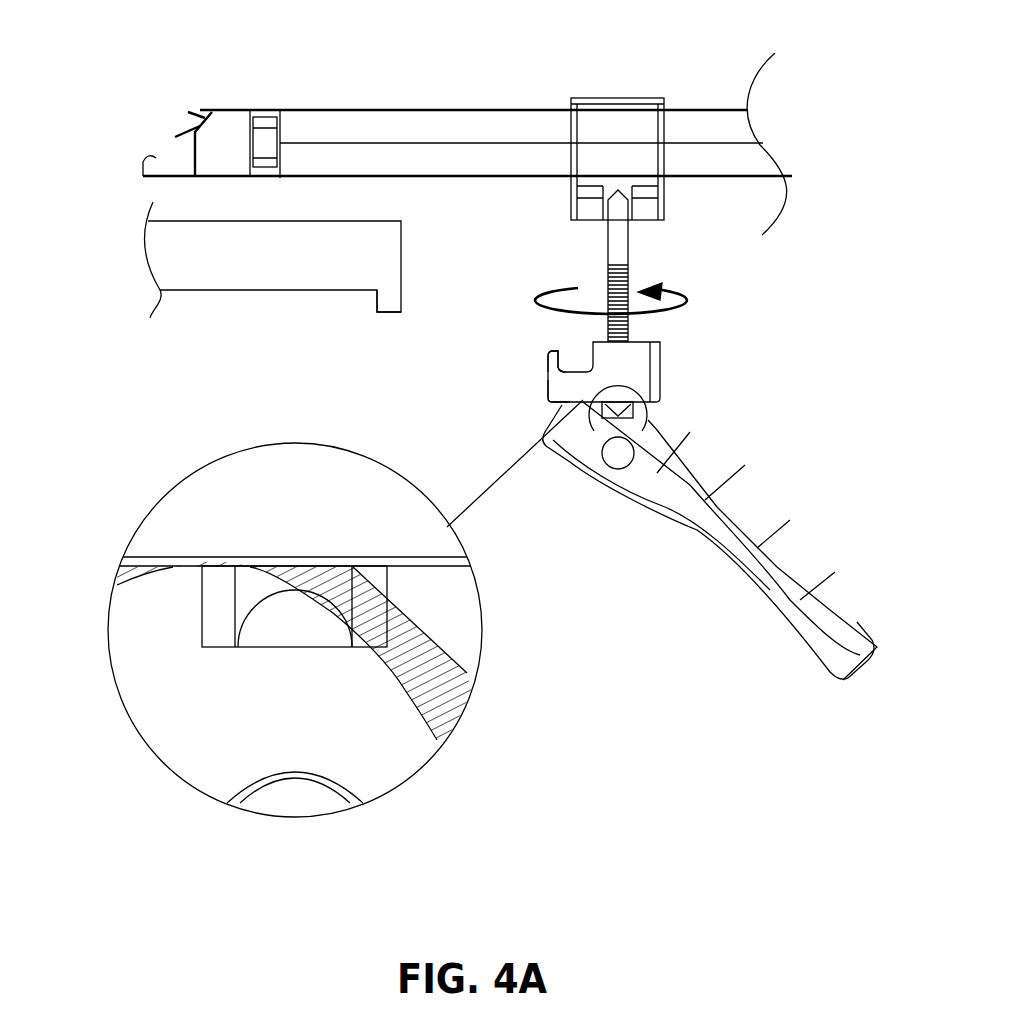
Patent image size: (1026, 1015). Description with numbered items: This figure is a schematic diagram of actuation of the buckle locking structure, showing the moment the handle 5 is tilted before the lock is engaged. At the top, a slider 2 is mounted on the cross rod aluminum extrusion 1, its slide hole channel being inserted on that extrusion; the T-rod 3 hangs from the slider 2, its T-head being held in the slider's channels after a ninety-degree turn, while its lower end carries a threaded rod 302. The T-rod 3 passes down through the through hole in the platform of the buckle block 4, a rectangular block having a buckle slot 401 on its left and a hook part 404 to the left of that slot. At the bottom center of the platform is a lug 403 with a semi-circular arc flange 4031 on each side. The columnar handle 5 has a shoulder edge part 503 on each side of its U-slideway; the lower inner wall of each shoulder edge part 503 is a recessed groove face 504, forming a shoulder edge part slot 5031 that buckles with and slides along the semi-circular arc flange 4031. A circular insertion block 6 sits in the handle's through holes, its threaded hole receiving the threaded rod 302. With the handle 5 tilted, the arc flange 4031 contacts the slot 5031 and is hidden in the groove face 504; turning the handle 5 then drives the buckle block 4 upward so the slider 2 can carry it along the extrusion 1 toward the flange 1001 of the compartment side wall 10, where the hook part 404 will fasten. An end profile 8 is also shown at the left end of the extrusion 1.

The cross rod aluminum extrusion 1 is at (418, 128).
The slider 2 is at (615, 113).
The T-rod 3 is at (620, 238).
The threaded rod 302 is at (607, 283).
The buckle block 4 is at (645, 370).
The buckle slot 401 is at (552, 387).
The hook part 404 is at (550, 352).
The lug 403 is at (202, 622).
The semi-circular arc flange 4031 is at (257, 603).
The handle 5 is at (800, 613).
The shoulder edge part 503 is at (443, 692).
The shoulder edge part slot 5031 is at (383, 653).
The groove face 504 is at (387, 725).
The circular insertion block 6 is at (617, 460).
The end cap 8 is at (227, 108).
The compartment side wall 10 is at (193, 258).
The flange 1001 is at (387, 315).